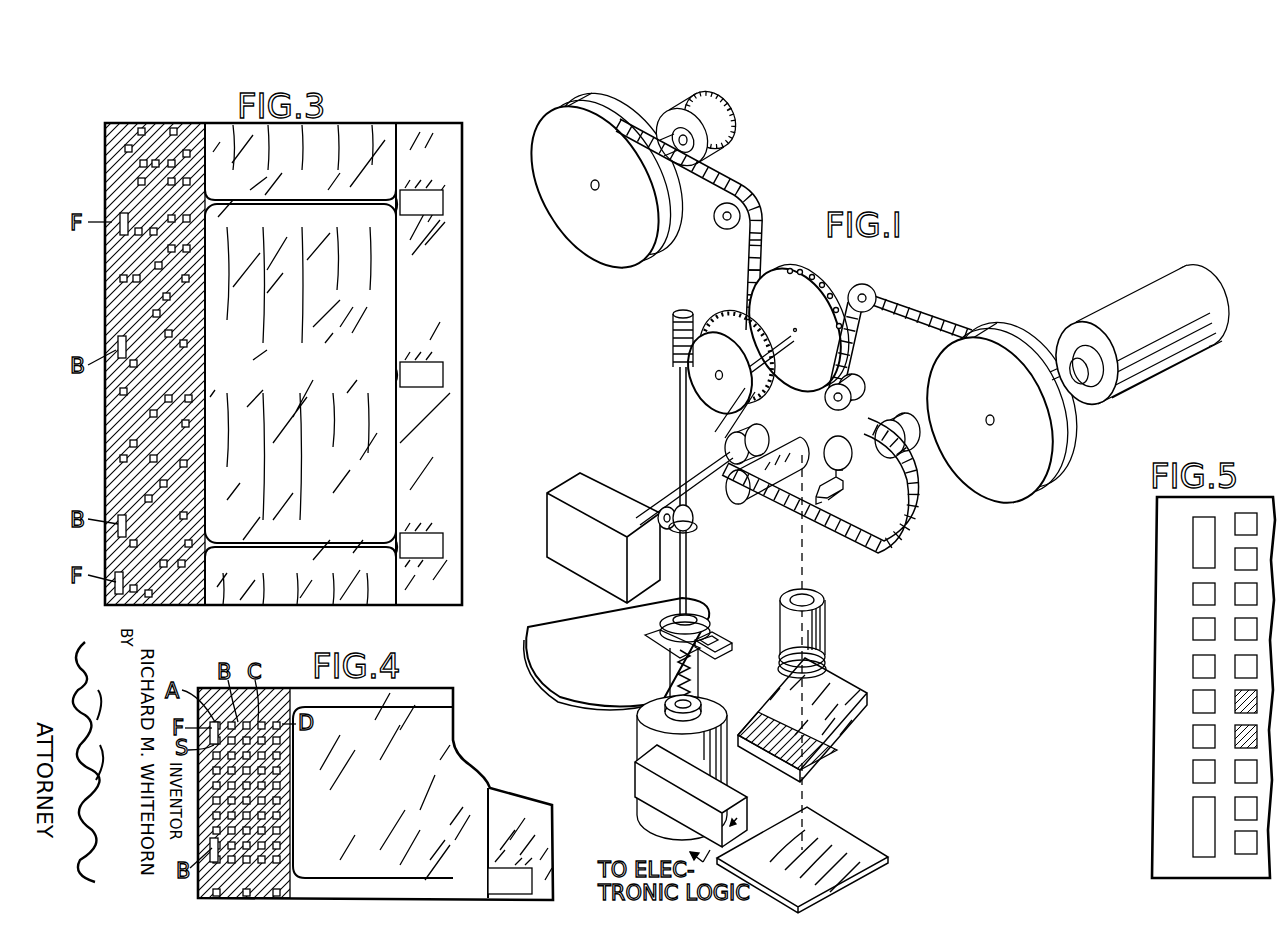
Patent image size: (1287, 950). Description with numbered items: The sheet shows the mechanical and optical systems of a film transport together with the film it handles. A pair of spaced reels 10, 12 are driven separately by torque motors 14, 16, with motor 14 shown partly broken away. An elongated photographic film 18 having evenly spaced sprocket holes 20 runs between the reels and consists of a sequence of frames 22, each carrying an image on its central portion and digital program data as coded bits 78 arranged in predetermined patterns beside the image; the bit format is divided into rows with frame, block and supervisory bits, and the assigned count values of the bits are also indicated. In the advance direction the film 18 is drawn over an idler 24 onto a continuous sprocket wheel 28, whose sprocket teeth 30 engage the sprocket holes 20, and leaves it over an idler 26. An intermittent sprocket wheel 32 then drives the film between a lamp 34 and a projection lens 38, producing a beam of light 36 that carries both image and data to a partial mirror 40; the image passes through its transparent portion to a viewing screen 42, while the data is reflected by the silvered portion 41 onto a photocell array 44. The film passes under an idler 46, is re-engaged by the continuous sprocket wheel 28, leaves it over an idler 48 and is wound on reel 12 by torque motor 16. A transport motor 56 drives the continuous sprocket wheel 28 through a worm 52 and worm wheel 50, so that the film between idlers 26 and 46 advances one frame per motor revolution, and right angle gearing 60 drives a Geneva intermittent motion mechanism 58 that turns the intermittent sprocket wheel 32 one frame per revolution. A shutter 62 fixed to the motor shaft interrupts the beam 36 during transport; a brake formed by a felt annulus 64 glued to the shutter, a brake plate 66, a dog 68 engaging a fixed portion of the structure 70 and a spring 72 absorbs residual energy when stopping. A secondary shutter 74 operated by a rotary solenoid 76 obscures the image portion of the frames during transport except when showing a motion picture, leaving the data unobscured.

In FIG. 1, the reel 10 is at (592, 242).
In FIG. 1, the reel 12 is at (978, 472).
In FIG. 1, the torque motor 14 is at (740, 118).
In FIG. 1, the torque motor 16 is at (1150, 300).
In FIG. 3, the photographic film 18 is at (372, 140).
In FIG. 4, the photographic film 18 is at (422, 688).
In FIG. 5, the photographic film 18 is at (1155, 545).
In FIG. 1, the photographic film 18 is at (736, 178).
In FIG. 3, the sprocket holes 20 is at (445, 200).
In FIG. 1, the sprocket holes 20 is at (768, 262).
In FIG. 3, the frame 22 is at (328, 195).
In FIG. 1, the frame 22 is at (932, 300).
In FIG. 1, the idler 24 is at (722, 222).
In FIG. 1, the idler 26 is at (740, 330).
In FIG. 1, the continuous sprocket wheel 28 is at (810, 278).
In FIG. 1, the sprocket teeth 30 is at (804, 276).
In FIG. 1, the intermittent sprocket wheel 32 is at (742, 438).
In FIG. 1, the lamp 34 is at (792, 450).
In FIG. 1, the beam of light 36 is at (806, 560).
In FIG. 1, the projection lens 38 is at (826, 595).
In FIG. 1, the partial mirror 40 is at (850, 735).
In FIG. 1, the silvered portion 41 is at (818, 775).
In FIG. 1, the viewing screen 42 is at (865, 840).
In FIG. 1, the photocell array 44 is at (740, 805).
In FIG. 1, the idler 46 is at (855, 385).
In FIG. 1, the idler 48 is at (872, 305).
In FIG. 1, the worm wheel 50 is at (705, 385).
In FIG. 1, the worm 52 is at (670, 330).
In FIG. 1, the transport motor 56 is at (640, 735).
In FIG. 1, the Geneva intermittent motion mechanism 58 is at (566, 475).
In FIG. 1, the right angle gearing 60 is at (695, 527).
In FIG. 1, the shutter 62 is at (545, 690).
In FIG. 1, the felt annulus 64 is at (700, 612).
In FIG. 1, the brake plate 66 is at (660, 648).
In FIG. 1, the dog 68 is at (722, 640).
In FIG. 1, the fixed portion of the structure 70 is at (718, 630).
In FIG. 1, the spring 72 is at (703, 668).
In FIG. 1, the secondary shutter 74 is at (838, 500).
In FIG. 1, the rotary solenoid 76 is at (896, 430).
In FIG. 3, the coded bits 78 is at (140, 425).